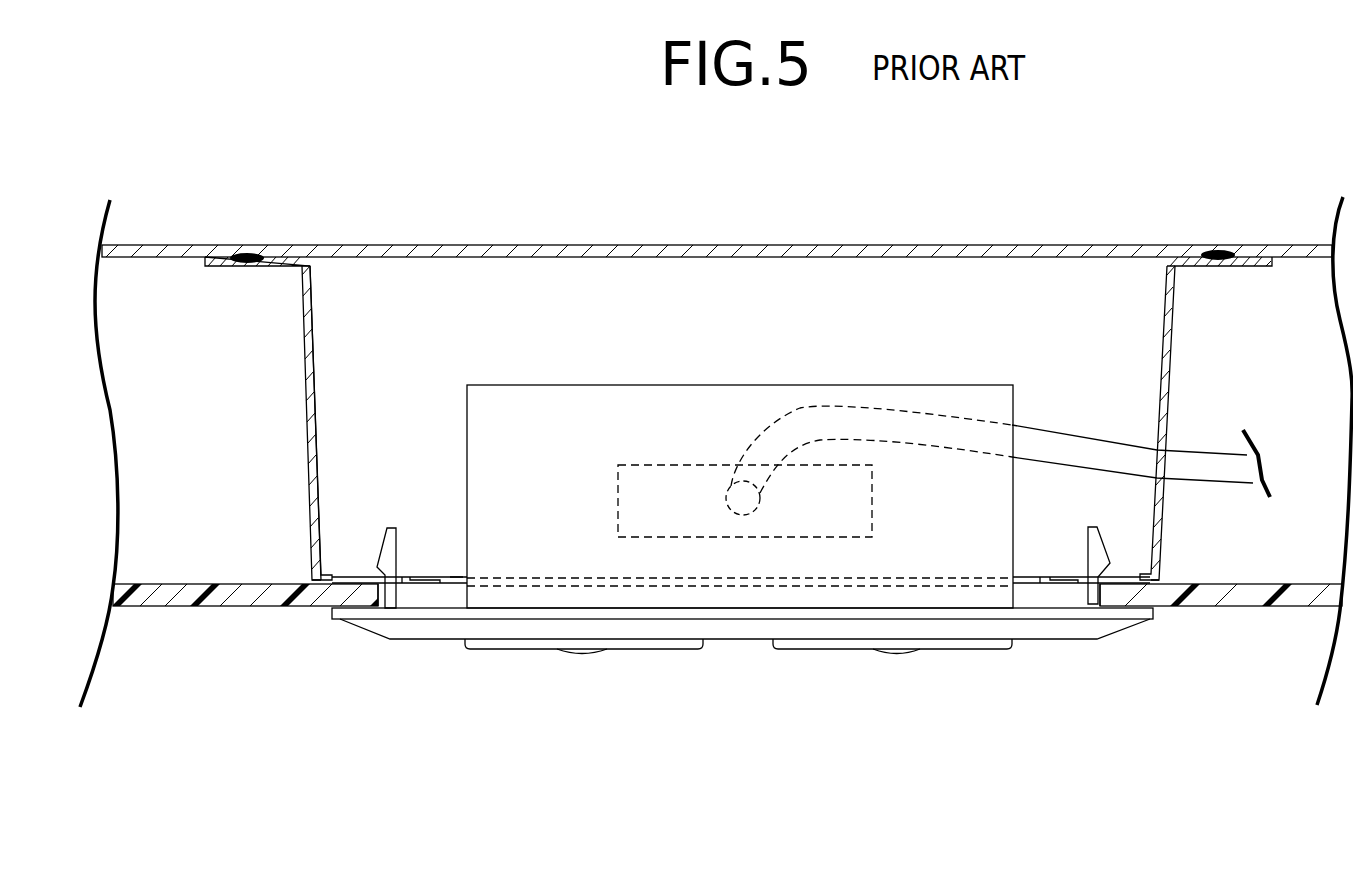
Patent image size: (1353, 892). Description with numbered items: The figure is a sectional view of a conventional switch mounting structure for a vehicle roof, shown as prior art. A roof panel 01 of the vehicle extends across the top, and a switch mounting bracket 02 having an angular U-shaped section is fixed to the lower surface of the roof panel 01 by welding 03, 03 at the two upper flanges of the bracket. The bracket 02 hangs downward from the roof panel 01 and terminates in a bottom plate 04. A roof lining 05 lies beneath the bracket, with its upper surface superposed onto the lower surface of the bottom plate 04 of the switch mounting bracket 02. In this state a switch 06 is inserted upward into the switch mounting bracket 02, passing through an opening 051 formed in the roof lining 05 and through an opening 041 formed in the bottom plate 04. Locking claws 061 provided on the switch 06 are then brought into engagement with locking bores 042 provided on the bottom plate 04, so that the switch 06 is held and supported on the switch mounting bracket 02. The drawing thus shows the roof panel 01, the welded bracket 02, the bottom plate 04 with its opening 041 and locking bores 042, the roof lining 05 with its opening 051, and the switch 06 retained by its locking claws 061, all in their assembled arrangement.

The roof panel 01 is at (666, 243).
The switch mounting bracket 02 is at (298, 362).
The welding 03 is at (250, 250).
The bottom plate 04 is at (355, 572).
The opening 041 is at (445, 580).
The locking bores 042 is at (1082, 575).
The roof lining 05 is at (222, 610).
The opening 051 is at (388, 594).
The switch 06 is at (749, 645).
The locking claws 061 is at (1118, 512).